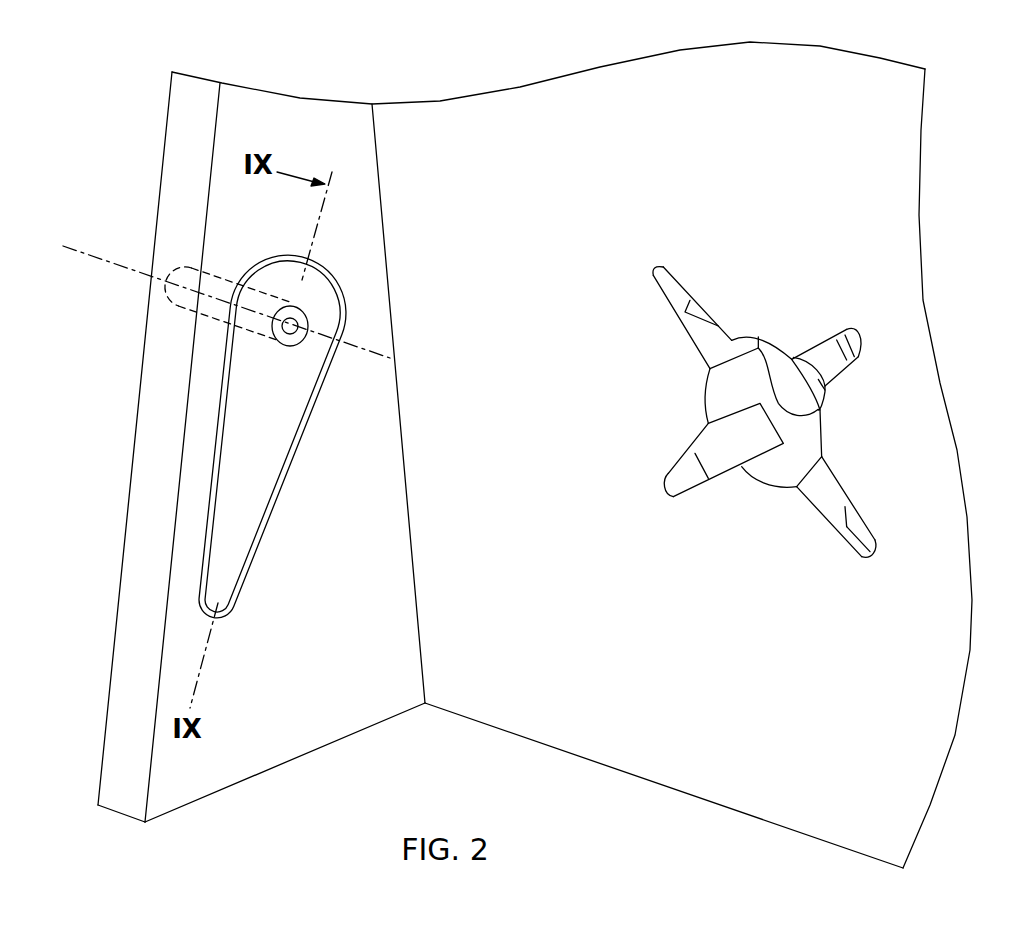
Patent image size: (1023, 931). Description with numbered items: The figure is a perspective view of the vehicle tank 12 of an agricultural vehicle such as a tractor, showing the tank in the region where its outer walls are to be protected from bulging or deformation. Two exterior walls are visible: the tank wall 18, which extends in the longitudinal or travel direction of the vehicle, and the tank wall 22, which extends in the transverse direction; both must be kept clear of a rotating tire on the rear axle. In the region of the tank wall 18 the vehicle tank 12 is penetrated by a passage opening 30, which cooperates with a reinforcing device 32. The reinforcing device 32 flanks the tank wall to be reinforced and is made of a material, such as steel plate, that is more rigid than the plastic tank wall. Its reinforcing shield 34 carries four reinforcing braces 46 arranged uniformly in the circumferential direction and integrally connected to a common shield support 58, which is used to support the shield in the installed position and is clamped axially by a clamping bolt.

The vehicle tank 12 is at (195, 137).
The tank wall 18 is at (845, 140).
The tank wall 22 is at (245, 702).
The passage opening 30 is at (212, 318).
The reinforcing device 32 is at (381, 636).
The reinforcing shield 34 is at (292, 459).
The reinforcing braces 46 is at (235, 528).
The shield support 58 is at (295, 345).